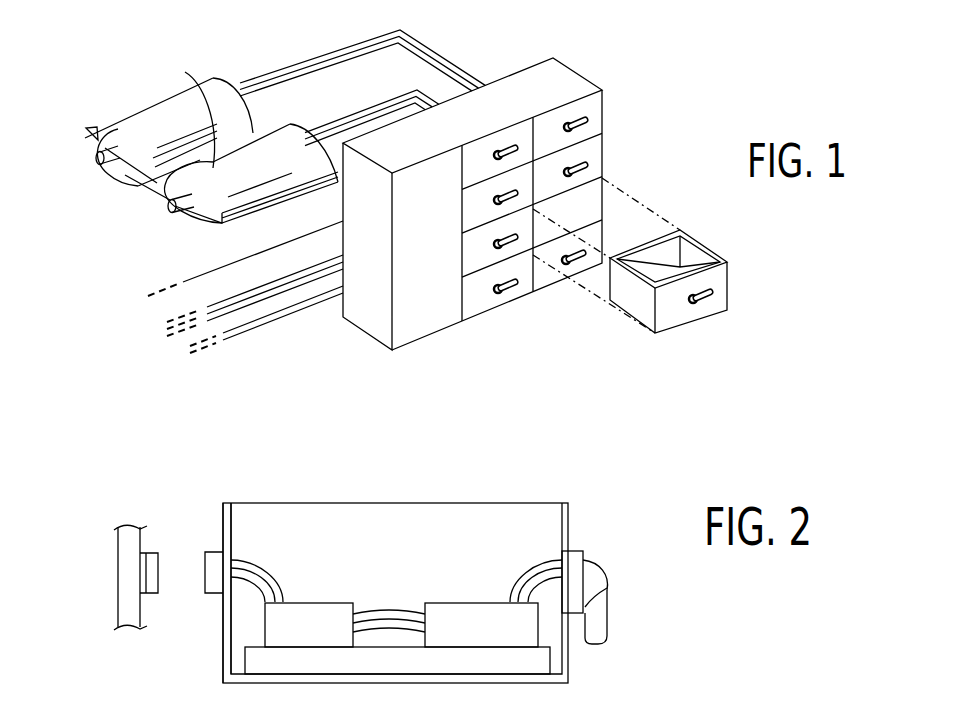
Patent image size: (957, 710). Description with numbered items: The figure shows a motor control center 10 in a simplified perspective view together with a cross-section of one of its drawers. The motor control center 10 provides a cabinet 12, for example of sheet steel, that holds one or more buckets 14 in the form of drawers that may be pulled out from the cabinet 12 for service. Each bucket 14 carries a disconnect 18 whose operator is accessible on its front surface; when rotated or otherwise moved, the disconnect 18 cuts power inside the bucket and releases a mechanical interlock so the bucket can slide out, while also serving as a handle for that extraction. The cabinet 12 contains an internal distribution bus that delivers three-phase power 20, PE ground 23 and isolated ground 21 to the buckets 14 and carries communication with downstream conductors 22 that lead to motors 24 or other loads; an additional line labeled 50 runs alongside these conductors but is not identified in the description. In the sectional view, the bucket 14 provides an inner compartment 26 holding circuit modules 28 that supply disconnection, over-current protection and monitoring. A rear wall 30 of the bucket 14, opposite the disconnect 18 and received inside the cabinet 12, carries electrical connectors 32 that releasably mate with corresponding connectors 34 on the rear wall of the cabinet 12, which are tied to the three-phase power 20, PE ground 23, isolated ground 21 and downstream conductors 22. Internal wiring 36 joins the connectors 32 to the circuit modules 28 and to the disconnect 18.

In FIG. 1, the motor control center 10 is at (598, 30).
In FIG. 1, the cabinet 12 is at (600, 88).
In FIG. 1, the bucket 14 is at (602, 131).
In FIG. 2, the bucket 14 is at (570, 512).
In FIG. 1, the disconnect 18 is at (515, 247).
In FIG. 2, the disconnect 18 is at (611, 553).
In FIG. 1, the three-phase power 20 is at (217, 300).
In FIG. 2, the three-phase power 20 is at (122, 607).
In FIG. 1, the isolated ground 21 is at (300, 308).
In FIG. 2, the isolated ground 21 is at (145, 559).
In FIG. 1, the downstream conductors 22 is at (362, 110).
In FIG. 2, the downstream conductors 22 is at (145, 559).
In FIG. 1, the PE ground 23 is at (255, 321).
In FIG. 1, the motor 24 is at (153, 117).
In FIG. 2, the inner compartment 26 is at (415, 528).
In FIG. 2, the circuit module 28 is at (440, 602).
In FIG. 2, the rear wall 30 is at (223, 522).
In FIG. 2, the electrical connector 32 is at (217, 600).
In FIG. 2, the corresponding connector 34 is at (155, 560).
In FIG. 2, the internal wiring 36 is at (267, 567).
In FIG. 1, the rail 50 is at (230, 263).
In FIG. 2, the rail 50 is at (145, 559).